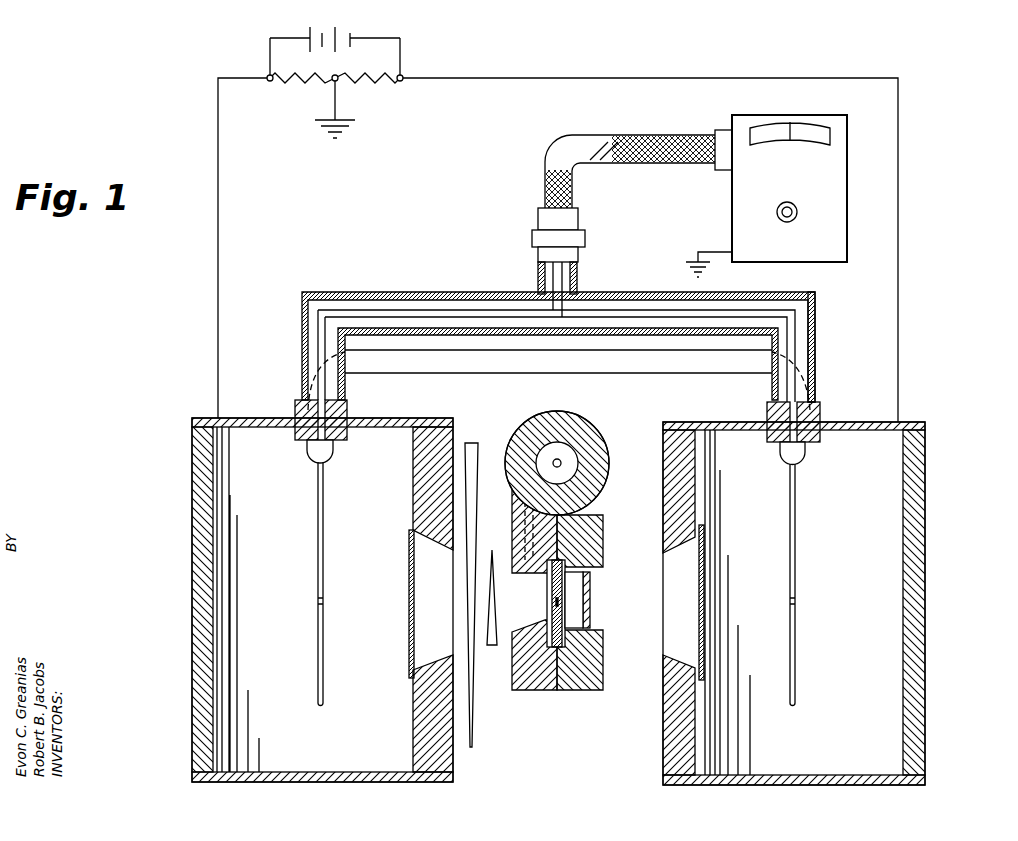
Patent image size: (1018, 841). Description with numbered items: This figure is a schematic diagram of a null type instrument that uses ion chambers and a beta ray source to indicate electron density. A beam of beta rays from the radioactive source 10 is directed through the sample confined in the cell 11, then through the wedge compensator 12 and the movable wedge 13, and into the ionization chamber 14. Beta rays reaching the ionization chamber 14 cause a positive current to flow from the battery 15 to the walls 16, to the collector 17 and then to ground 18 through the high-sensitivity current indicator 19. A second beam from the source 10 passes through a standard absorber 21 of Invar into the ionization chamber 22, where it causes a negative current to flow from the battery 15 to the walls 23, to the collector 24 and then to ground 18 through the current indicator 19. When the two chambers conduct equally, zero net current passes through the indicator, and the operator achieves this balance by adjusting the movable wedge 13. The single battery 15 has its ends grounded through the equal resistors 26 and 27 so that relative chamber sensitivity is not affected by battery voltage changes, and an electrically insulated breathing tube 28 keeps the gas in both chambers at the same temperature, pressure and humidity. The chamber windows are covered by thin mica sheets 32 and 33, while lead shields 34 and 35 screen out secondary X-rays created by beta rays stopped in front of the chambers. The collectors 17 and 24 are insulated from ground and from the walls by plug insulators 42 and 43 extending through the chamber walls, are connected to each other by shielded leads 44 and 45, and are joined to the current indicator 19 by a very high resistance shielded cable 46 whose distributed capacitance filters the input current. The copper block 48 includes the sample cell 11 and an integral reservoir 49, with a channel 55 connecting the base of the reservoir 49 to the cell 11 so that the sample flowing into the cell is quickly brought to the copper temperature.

The radioactive source 10 is at (560, 601).
The sample cell 11 is at (537, 612).
The wedge compensator 12 is at (492, 648).
The movable wedge 13 is at (478, 443).
The ionization chamber 14 is at (176, 434).
The battery 15 is at (323, 32).
The walls 16 is at (245, 420).
The collector 17 is at (315, 554).
The ground 18 is at (706, 254).
The high-sensitivity current indicator 19 is at (798, 186).
The standard absorber 21 is at (590, 612).
The ionization chamber 22 is at (939, 467).
The walls 23 is at (849, 424).
The collector 24 is at (800, 556).
The resistor 26 is at (305, 81).
The resistor 27 is at (372, 81).
The electrically insulated breathing tube 28 is at (510, 377).
The mica sheet 32 is at (408, 592).
The mica sheet 33 is at (703, 594).
The lead shield 34 is at (440, 486).
The lead shield 35 is at (675, 507).
The plug insulator 42 is at (359, 409).
The plug insulator 43 is at (755, 411).
The shielded lead 44 is at (398, 310).
The shielded lead 45 is at (640, 308).
The shielded cable 46 is at (538, 270).
The copper cell structure or block 48 is at (574, 702).
The reservoir 49 is at (587, 410).
The channel 55 is at (512, 522).